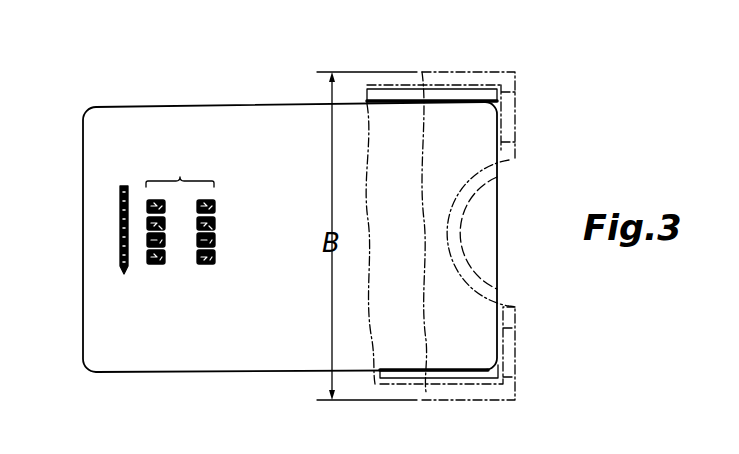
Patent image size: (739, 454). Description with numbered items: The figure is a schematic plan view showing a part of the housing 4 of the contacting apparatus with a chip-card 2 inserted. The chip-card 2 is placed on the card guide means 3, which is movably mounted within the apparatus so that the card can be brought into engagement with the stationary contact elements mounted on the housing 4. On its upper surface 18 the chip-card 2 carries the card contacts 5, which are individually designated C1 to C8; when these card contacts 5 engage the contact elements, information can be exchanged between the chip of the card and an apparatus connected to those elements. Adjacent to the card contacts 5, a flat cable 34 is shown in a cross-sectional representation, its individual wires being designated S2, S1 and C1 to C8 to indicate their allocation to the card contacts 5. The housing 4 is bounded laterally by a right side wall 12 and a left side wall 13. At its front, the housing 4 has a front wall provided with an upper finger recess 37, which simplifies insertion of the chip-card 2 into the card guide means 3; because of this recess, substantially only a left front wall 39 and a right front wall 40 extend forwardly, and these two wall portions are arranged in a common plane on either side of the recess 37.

The chip-card 2 is at (106, 103).
The card guide means 3 is at (378, 87).
The housing 4 is at (434, 69).
The card contacts 5 is at (180, 204).
The right side wall 12 is at (476, 68).
The left side wall 13 is at (471, 401).
The upper surface 18 is at (100, 153).
The flat cable 34 is at (125, 271).
The upper finger recess 37 is at (481, 281).
The left front wall 39 is at (516, 356).
The right front wall 40 is at (516, 118).